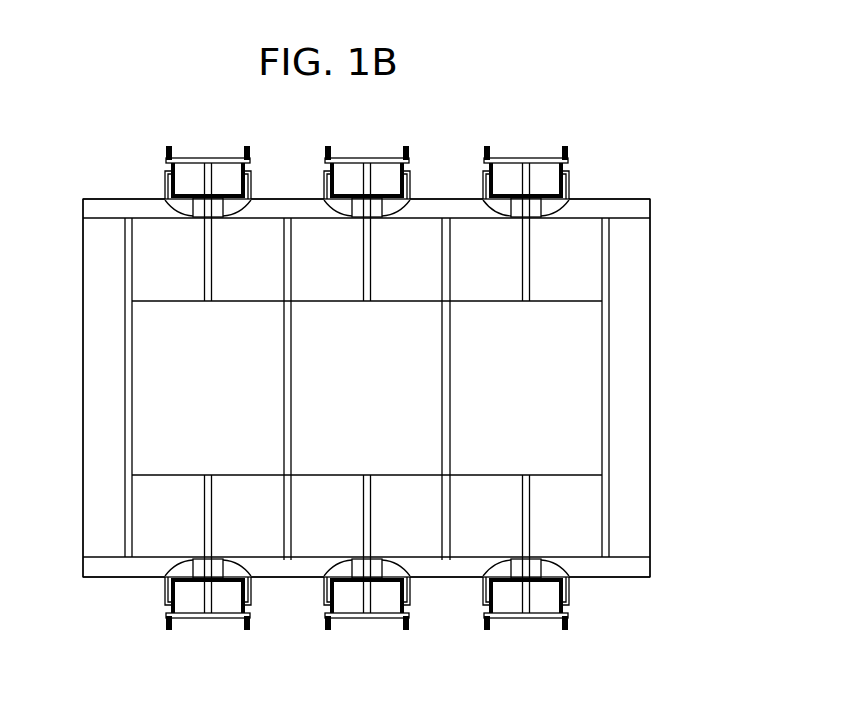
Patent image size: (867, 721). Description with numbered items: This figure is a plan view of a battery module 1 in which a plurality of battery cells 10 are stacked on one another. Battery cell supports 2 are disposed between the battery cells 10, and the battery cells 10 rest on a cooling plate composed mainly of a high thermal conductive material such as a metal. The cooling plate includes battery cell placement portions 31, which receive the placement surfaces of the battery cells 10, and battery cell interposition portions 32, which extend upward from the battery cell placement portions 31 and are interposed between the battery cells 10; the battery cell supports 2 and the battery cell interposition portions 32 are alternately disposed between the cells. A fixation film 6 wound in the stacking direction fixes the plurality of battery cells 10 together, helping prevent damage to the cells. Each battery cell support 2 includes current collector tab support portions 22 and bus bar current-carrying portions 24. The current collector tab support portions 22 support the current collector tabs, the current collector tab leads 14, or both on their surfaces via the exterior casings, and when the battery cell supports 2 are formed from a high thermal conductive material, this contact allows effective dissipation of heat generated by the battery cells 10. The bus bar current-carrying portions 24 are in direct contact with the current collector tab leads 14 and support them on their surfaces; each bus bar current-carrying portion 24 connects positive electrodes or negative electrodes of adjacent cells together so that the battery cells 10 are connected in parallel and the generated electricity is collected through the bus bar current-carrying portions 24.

The battery module 1 is at (648, 122).
The battery cell support 2 is at (203, 290).
The fixation film 6 is at (580, 348).
The battery cell 10 is at (143, 243).
The current collector tab lead 14 is at (167, 162).
The current collector tab support portion 22 is at (197, 192).
The bus bar current-carrying portion 24 is at (226, 158).
The battery cell placement portion 31 is at (92, 380).
The battery cell interposition portion 32 is at (128, 432).